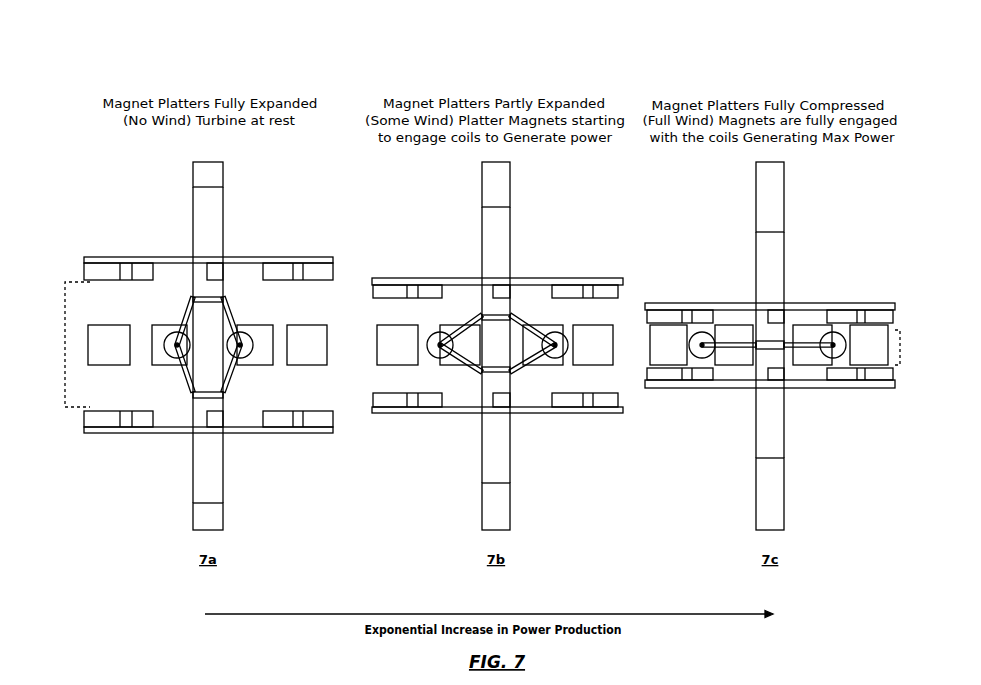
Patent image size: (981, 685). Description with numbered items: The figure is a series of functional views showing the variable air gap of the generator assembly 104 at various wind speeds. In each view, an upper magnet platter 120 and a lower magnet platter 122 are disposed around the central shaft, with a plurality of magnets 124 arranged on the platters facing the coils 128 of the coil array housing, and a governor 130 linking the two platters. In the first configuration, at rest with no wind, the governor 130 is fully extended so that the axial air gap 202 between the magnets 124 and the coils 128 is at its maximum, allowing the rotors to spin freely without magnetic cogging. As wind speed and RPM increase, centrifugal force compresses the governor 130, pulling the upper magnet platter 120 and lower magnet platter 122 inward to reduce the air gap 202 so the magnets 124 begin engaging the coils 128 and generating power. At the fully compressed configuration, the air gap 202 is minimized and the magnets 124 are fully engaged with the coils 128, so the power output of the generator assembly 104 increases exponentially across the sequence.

The generator assembly 104 is at (758, 67).
The upper magnet platter 120 is at (142, 257).
The lower magnet platter 122 is at (103, 420).
The magnets 124 is at (103, 269).
The coils 128 is at (109, 345).
The governor 130 is at (240, 363).
The axial air gap 202 is at (62, 345).